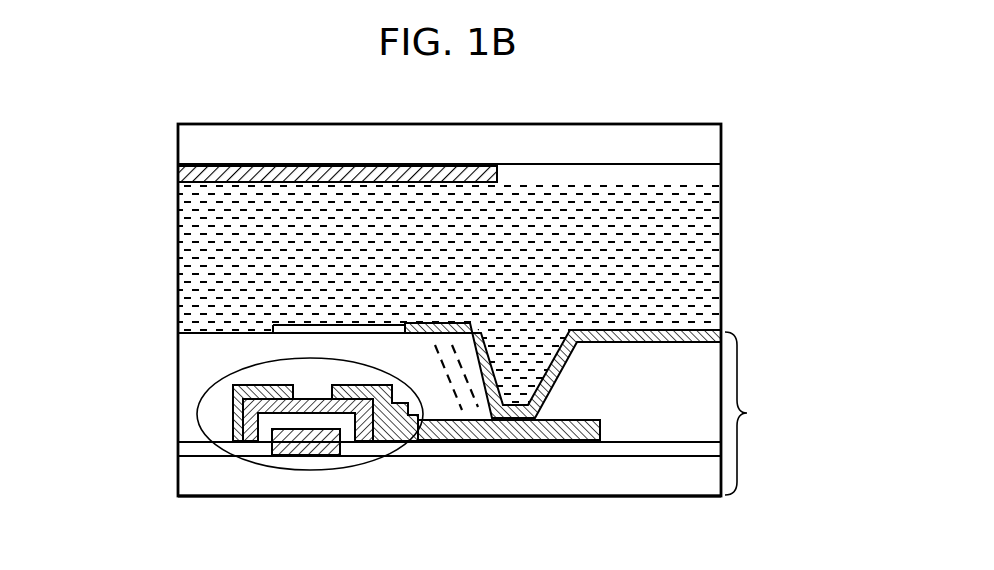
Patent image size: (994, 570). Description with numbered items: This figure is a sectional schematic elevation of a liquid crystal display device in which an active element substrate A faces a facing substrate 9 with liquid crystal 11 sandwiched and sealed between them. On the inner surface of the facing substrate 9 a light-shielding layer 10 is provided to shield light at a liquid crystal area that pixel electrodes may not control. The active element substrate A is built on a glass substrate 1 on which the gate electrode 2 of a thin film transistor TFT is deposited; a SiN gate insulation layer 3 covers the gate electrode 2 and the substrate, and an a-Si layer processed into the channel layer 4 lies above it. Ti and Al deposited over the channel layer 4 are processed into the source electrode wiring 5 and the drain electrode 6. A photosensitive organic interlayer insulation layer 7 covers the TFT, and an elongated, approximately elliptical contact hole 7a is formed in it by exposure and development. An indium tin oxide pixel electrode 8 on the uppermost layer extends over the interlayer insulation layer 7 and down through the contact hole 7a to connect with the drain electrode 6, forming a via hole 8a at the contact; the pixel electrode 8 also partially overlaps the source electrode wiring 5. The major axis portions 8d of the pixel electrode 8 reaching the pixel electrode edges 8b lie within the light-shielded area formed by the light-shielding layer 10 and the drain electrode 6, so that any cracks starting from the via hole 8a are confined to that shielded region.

The glass substrate 1 is at (690, 477).
The gate electrode 2 is at (275, 447).
The gate insulation layer 3 is at (680, 447).
The channel layer 4 is at (240, 408).
The source electrode wiring 5 is at (233, 392).
The drain electrode 6 is at (600, 427).
The interlayer insulation layer 7 is at (197, 355).
The contact hole 7a is at (510, 328).
The pixel electrode 8 is at (720, 330).
The via hole 8a is at (472, 407).
The pixel electrode edge 8b is at (462, 410).
The major axis portion 8d is at (402, 336).
The facing substrate 9 is at (188, 145).
The light-shielding layer 10 is at (180, 172).
The liquid crystal 11 is at (673, 228).
The active element substrate A is at (751, 413).
The thin film transistor TFT is at (268, 451).